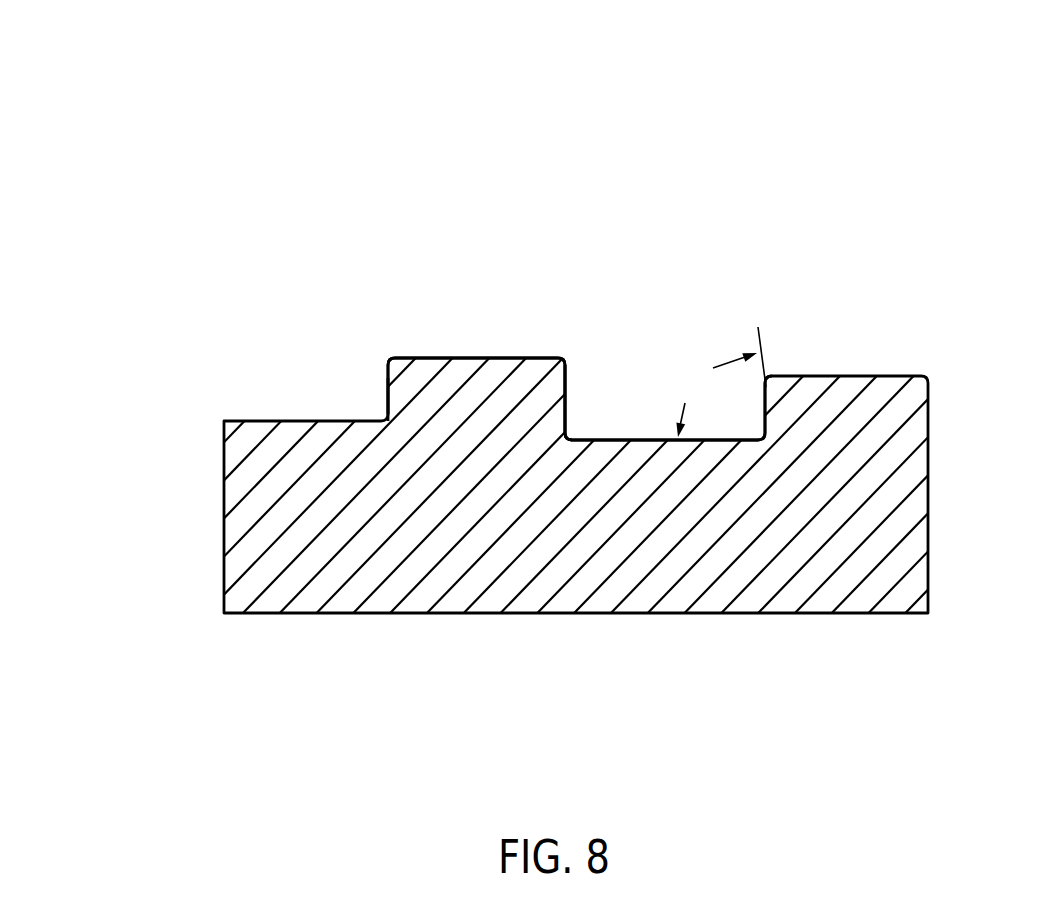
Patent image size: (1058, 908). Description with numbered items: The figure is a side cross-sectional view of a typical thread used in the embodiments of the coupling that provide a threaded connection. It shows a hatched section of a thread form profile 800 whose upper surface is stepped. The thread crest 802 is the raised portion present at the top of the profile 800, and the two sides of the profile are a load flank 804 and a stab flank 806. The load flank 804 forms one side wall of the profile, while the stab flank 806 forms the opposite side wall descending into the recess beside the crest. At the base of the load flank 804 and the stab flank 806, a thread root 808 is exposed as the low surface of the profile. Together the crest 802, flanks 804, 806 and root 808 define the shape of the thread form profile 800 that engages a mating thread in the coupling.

The thread form profile 800 is at (762, 192).
The thread crest 802 is at (460, 350).
The load flank 804 is at (380, 388).
The stab flank 806 is at (583, 377).
The thread root 808 is at (646, 430).